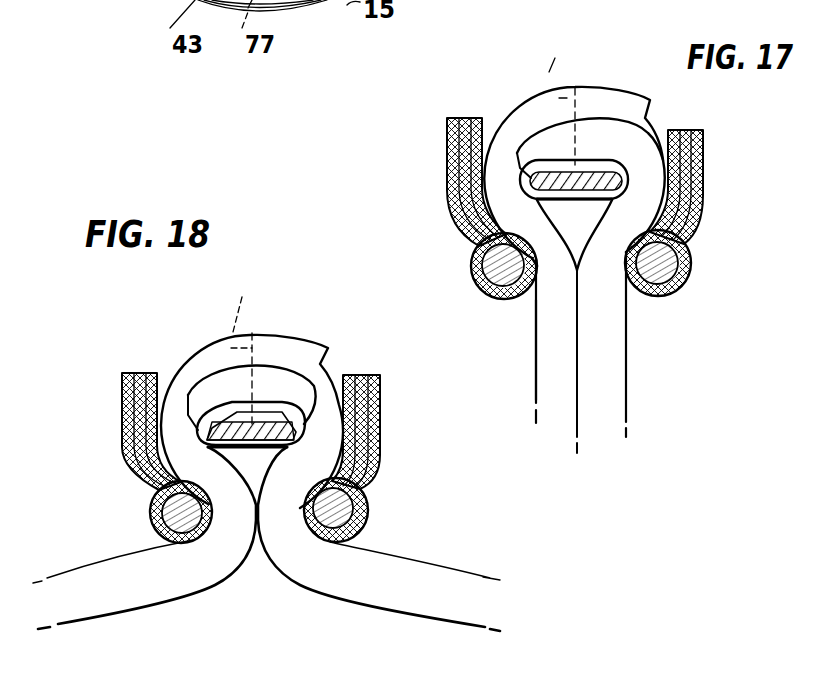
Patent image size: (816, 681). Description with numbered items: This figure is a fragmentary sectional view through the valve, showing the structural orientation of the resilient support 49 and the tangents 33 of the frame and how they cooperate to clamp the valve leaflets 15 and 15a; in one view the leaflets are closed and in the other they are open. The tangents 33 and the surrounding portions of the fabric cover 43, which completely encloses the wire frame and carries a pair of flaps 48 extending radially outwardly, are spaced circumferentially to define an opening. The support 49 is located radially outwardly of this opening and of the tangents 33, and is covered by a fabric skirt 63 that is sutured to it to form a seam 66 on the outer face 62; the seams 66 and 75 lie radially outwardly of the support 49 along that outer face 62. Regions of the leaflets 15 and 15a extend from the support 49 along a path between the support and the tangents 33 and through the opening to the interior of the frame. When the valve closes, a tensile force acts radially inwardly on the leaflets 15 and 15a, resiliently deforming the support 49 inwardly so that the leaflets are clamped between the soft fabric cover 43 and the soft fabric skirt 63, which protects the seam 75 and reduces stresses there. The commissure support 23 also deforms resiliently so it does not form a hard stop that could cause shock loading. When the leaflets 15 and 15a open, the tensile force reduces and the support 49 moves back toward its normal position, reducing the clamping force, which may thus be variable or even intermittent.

In FIG. 17, the outer face 62 is at (532, 107).
In FIG. 18, the outer face 62 is at (195, 373).
In FIG. 17, the seam 75 is at (568, 240).
In FIG. 18, the seam 75 is at (232, 353).
In FIG. 17, the seam 66 is at (592, 98).
In FIG. 18, the seam 66 is at (281, 342).
In FIG. 17, the resilient support 49 is at (586, 172).
In FIG. 18, the resilient support 49 is at (283, 406).
In FIG. 17, the fabric skirt 63 is at (628, 179).
In FIG. 18, the fabric skirt 63 is at (306, 416).
In FIG. 17, the flaps 48 is at (455, 172).
In FIG. 18, the flaps 48 is at (122, 408).
In FIG. 17, the fabric cover 43 is at (693, 268).
In FIG. 18, the fabric cover 43 is at (363, 522).
In FIG. 17, the tangents 33 is at (490, 263).
In FIG. 18, the tangents 33 is at (172, 508).
In FIG. 17, the commissure support 23 is at (488, 291).
In FIG. 18, the commissure support 23 is at (182, 545).
In FIG. 17, the valve leaflet 15 is at (610, 380).
In FIG. 18, the valve leaflet 15 is at (418, 572).
In FIG. 17, the valve leaflet 15a is at (545, 372).
In FIG. 18, the valve leaflet 15a is at (93, 578).